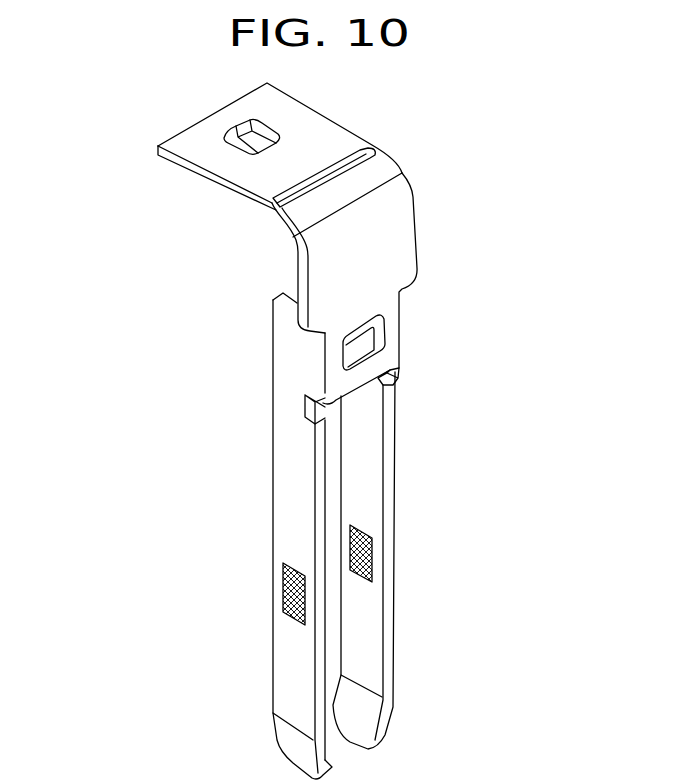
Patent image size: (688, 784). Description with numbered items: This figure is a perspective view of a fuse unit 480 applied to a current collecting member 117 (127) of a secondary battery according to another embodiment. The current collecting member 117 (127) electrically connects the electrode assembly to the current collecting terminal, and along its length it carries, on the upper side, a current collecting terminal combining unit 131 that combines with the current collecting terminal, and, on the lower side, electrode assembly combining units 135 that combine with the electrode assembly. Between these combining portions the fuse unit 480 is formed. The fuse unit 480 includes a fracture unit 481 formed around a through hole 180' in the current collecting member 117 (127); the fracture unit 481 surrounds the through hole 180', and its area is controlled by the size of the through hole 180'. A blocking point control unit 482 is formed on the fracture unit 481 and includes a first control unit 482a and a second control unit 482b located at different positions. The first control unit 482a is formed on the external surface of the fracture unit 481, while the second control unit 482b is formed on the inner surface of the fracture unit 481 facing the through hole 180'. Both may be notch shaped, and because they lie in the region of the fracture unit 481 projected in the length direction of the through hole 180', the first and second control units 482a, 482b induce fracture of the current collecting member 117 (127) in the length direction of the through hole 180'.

The current collecting member 117 is at (311, 420).
The current collecting member 127 is at (402, 510).
The current collecting terminal combining unit 131 is at (243, 136).
The through hole 180' is at (324, 138).
The electrode assembly combining unit 135 is at (285, 590).
The fuse unit 480 is at (105, 223).
The fracture unit 481 is at (272, 205).
The blocking point control unit 482 is at (158, 200).
The first control unit 482a is at (277, 213).
The second control unit 482b is at (273, 212).